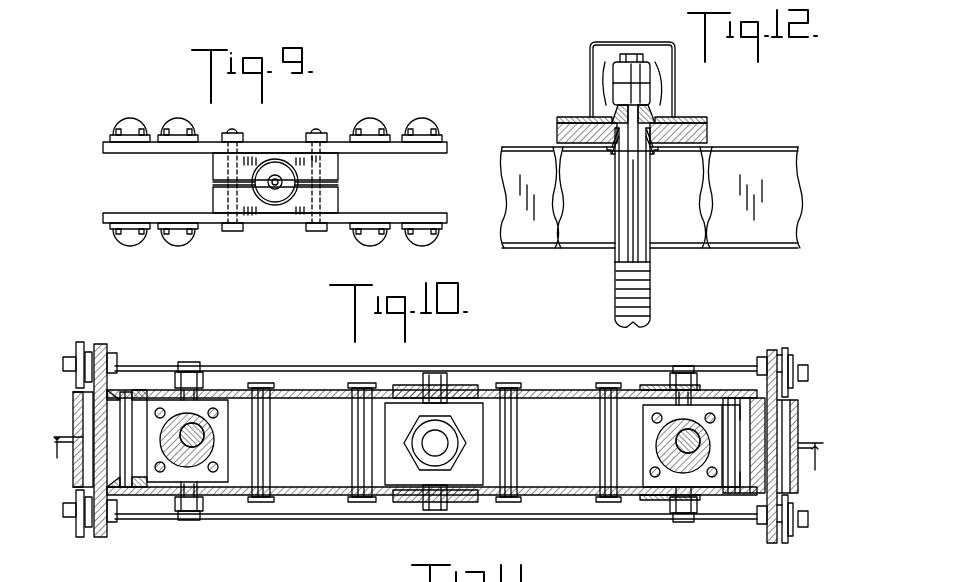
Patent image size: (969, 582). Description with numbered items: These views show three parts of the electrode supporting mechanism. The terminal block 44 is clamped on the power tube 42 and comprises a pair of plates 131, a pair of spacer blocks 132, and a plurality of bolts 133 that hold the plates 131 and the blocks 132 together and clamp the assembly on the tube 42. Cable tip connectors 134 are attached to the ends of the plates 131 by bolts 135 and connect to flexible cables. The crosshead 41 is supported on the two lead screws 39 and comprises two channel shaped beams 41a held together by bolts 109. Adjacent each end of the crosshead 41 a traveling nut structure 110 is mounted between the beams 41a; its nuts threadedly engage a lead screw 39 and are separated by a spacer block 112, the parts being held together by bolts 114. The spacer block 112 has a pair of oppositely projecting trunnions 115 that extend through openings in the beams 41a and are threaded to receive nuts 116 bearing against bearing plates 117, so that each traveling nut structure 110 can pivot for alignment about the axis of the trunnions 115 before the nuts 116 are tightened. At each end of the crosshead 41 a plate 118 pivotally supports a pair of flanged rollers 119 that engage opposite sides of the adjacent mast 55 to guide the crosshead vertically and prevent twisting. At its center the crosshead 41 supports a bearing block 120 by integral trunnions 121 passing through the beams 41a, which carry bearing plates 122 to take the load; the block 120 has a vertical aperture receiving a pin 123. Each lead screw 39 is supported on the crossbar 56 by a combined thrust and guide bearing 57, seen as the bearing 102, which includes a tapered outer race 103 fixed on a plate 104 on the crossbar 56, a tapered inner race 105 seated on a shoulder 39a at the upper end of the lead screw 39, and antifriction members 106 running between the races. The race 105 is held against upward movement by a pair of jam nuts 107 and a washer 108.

In FIG. 12, the lead screw 39 is at (618, 283).
In FIG. 10, the lead screw 39 is at (190, 452).
In FIG. 12, the shoulder 39a is at (645, 165).
In FIG. 10, the crosshead 41 is at (571, 365).
In FIG. 10, the channel shaped beam 41a is at (300, 390).
In FIG. 9, the power tube 42 is at (278, 162).
In FIG. 9, the terminal block 44 is at (443, 242).
In FIG. 10, the mast 55 is at (73, 418).
In FIG. 12, the crossbar 56 is at (738, 228).
In FIG. 12, the combined thrust and guide bearing 57 is at (705, 89).
In FIG. 12, the bearing 102 is at (598, 93).
In FIG. 12, the tapered outer race 103 is at (583, 117).
In FIG. 12, the plate 104 is at (705, 130).
In FIG. 12, the tapered inner race 105 is at (670, 95).
In FIG. 12, the antifriction member 106 is at (656, 118).
In FIG. 12, the jam nut 107 is at (613, 73).
In FIG. 12, the washer 108 is at (655, 60).
In FIG. 10, the bolt 109 is at (352, 440).
In FIG. 10, the traveling nut structure 110 is at (240, 475).
In FIG. 10, the spacer block 112 is at (730, 398).
In FIG. 10, the bolt 114 is at (160, 482).
In FIG. 10, the trunnion 115 is at (192, 362).
In FIG. 10, the nut 116 is at (672, 366).
In FIG. 10, the bearing plate 117 is at (645, 385).
In FIG. 10, the plate 118 is at (100, 350).
In FIG. 10, the flanged roller 119 is at (80, 342).
In FIG. 10, the bearing block 120 is at (480, 405).
In FIG. 10, the trunnion 121 is at (437, 374).
In FIG. 10, the bearing plate 122 is at (470, 388).
In FIG. 10, the pin 123 is at (430, 447).
In FIG. 9, the plate 131 is at (103, 147).
In FIG. 9, the spacer block 132 is at (213, 195).
In FIG. 9, the bolt 133 is at (312, 232).
In FIG. 9, the cable tip connector 134 is at (176, 125).
In FIG. 9, the bolt 135 is at (112, 134).